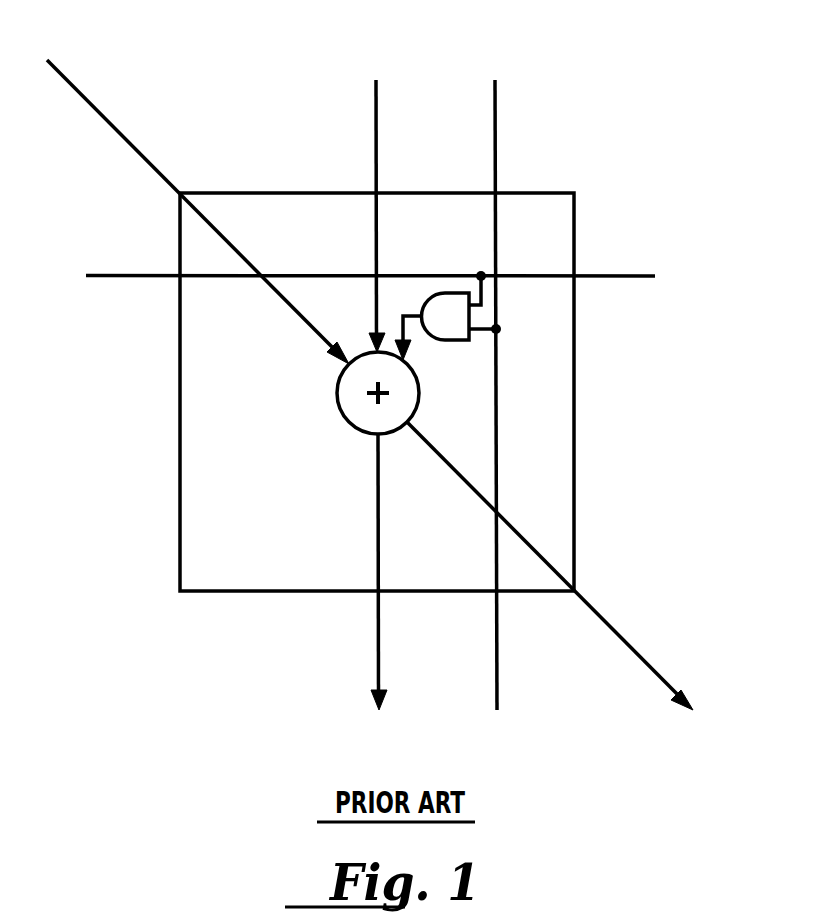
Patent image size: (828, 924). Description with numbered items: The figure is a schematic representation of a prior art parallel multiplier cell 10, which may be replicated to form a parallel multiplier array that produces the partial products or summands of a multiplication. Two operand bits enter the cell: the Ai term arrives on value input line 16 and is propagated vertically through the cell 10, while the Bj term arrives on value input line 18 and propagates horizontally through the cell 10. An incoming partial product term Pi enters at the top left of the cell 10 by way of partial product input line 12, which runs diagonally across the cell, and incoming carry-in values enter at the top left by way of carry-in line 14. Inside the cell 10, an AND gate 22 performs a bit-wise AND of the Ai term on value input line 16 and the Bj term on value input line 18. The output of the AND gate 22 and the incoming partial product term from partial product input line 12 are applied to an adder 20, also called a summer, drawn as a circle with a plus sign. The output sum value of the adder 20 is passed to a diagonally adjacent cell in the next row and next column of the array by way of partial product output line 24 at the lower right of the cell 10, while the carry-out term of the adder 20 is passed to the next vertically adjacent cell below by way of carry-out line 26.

The parallel multiplier cell 10 is at (630, 86).
The partial product input line 12 is at (72, 80).
The carry-in line 14 is at (375, 133).
The value input line 16 is at (495, 133).
The value input line 18 is at (143, 278).
The adder 20 is at (360, 410).
The AND gate 22 is at (448, 326).
The partial product output line 24 is at (617, 628).
The carry-out line 26 is at (378, 628).